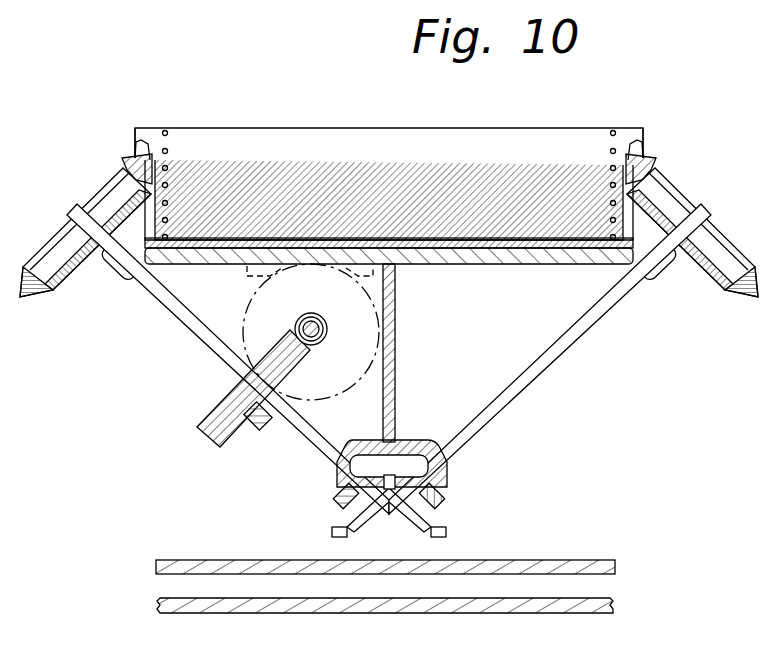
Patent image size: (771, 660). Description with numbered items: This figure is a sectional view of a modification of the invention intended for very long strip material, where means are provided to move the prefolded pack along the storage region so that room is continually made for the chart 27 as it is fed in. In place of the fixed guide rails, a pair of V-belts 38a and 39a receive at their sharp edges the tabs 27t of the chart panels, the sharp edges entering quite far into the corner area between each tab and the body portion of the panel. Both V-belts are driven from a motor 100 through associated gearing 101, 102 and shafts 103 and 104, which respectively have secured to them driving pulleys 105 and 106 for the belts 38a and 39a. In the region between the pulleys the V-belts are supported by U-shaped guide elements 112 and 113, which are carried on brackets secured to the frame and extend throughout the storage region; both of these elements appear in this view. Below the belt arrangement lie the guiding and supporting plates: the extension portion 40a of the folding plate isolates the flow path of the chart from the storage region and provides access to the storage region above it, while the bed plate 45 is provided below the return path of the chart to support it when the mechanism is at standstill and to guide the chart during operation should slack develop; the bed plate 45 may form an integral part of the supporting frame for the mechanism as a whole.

The chart 27 is at (331, 128).
The tabs 27t is at (152, 133).
The V-belt 38a is at (145, 152).
The V-belt 39a is at (633, 150).
The U-shaped guide element 112 is at (132, 162).
The U-shaped guide element 113 is at (652, 164).
The driving pulley 105 is at (66, 260).
The driving pulley 106 is at (714, 258).
The shaft 103 is at (303, 442).
The shaft 104 is at (525, 388).
The gearing 102 is at (389, 502).
The motor 100 is at (324, 392).
The gearing 101 is at (298, 326).
The extension portion of plate 40a is at (158, 567).
The bed plate 45 is at (160, 605).